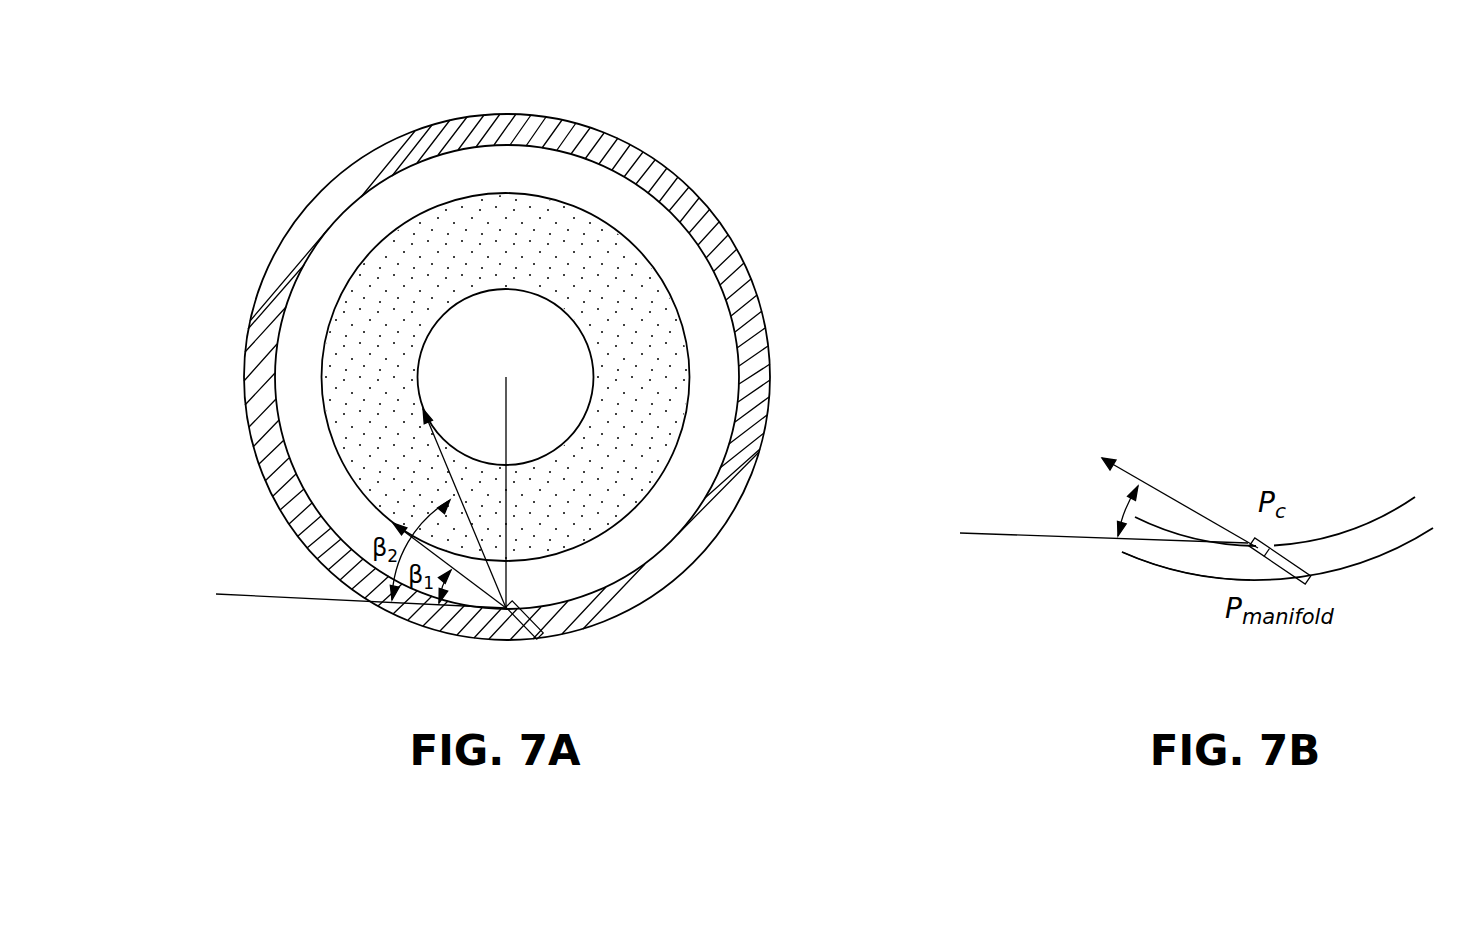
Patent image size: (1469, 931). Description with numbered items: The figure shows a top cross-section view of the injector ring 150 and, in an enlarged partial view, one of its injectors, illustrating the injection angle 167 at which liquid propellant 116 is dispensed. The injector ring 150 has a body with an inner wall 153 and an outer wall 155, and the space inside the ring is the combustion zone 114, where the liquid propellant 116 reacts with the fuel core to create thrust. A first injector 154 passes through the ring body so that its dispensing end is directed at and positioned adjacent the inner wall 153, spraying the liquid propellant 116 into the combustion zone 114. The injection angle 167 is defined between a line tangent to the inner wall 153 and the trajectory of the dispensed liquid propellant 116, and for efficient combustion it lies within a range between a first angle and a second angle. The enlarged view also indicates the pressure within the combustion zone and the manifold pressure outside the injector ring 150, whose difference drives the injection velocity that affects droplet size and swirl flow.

In FIG. 7A, the combustion zone 114 is at (660, 247).
In FIG. 7A, the liquid propellant 116 is at (352, 406).
In FIG. 7B, the liquid propellant 116 is at (1183, 504).
In FIG. 7A, the injector ring 150 is at (752, 277).
In FIG. 7B, the injector ring 150 is at (1163, 572).
In FIG. 7B, the inner wall 153 is at (1352, 525).
In FIG. 7A, the first injector 154 is at (543, 640).
In FIG. 7B, the first injector 154 is at (1292, 565).
In FIG. 7B, the outer wall 155 is at (1363, 570).
In FIG. 7B, the injection angle β 167 is at (1085, 500).